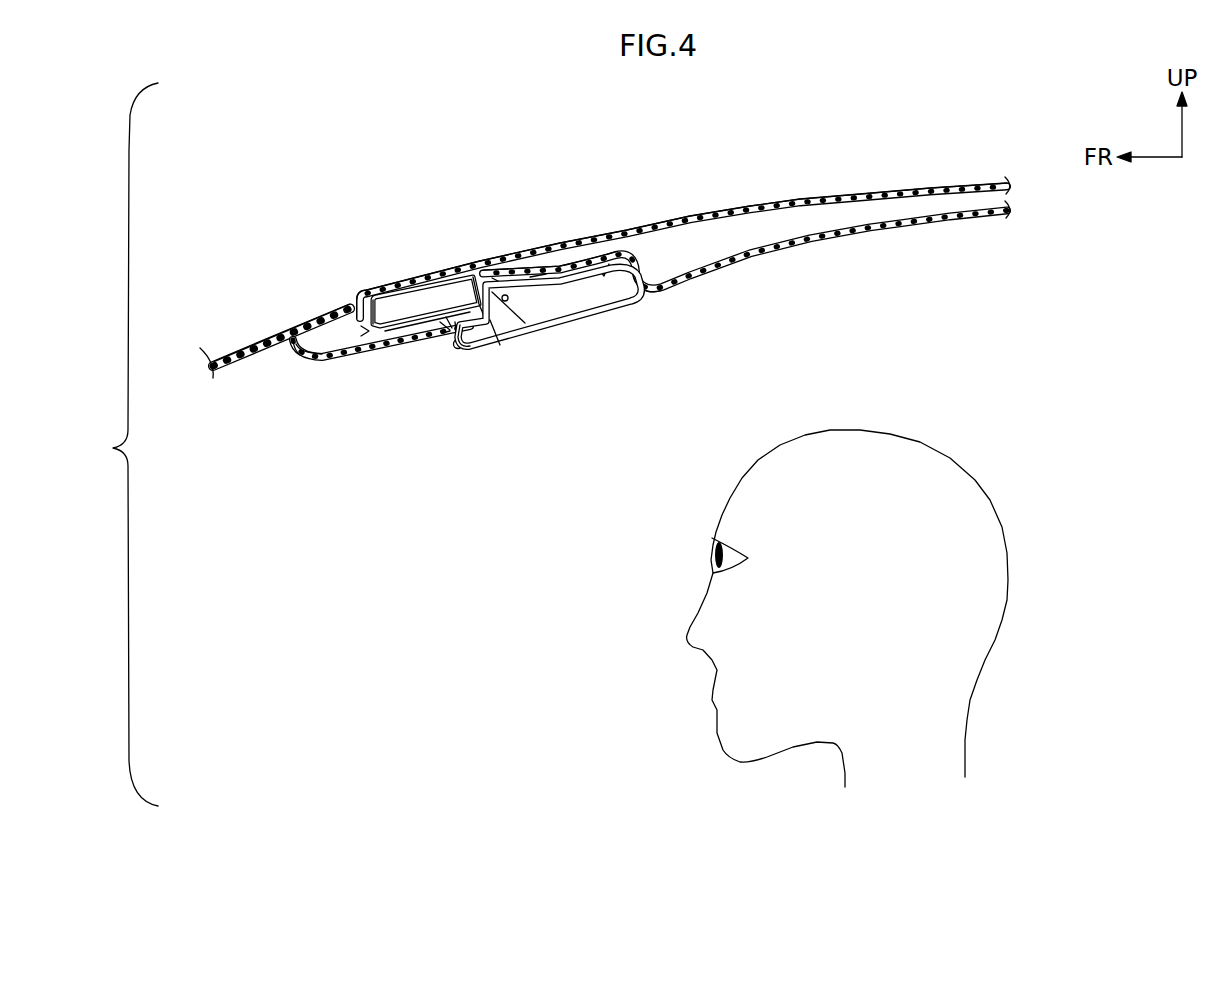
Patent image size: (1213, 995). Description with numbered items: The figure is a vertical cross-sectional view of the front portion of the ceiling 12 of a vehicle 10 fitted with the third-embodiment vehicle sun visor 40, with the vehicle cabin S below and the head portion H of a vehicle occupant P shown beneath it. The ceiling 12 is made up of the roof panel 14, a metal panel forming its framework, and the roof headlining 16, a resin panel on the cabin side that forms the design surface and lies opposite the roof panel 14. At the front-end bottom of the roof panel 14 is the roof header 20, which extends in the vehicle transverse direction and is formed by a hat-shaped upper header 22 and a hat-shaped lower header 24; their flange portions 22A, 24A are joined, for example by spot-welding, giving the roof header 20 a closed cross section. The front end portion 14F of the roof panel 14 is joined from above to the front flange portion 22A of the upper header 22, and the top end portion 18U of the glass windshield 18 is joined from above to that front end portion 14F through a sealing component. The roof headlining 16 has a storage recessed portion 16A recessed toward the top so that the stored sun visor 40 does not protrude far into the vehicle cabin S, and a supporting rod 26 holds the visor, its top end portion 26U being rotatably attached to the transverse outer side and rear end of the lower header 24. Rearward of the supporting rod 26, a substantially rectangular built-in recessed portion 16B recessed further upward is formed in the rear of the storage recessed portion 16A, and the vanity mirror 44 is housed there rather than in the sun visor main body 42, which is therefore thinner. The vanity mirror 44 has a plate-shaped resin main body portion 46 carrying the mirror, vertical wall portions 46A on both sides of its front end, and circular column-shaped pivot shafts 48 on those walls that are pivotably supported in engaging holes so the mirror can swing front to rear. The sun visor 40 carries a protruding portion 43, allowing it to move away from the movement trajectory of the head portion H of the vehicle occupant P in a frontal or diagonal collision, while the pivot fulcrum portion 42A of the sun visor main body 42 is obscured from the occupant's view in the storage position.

The vehicle 10 is at (873, 171).
The ceiling 12 is at (741, 206).
The roof panel 14 is at (810, 197).
The front end portion of the roof panel 14F is at (352, 300).
The roof headlining 16 is at (748, 260).
The storage recessed portion 16A is at (390, 354).
The built-in recessed portion 16B is at (575, 265).
The glass windshield 18 is at (232, 352).
The top end portion of the glass windshield 18U is at (355, 304).
The roof header 20 is at (322, 354).
The upper header 22 is at (473, 268).
The flange portion of the upper header 22A is at (343, 316).
The lower header 24 is at (352, 358).
The flange portion of the lower header 24A is at (296, 342).
The supporting rod 26 is at (450, 345).
The top end portion of the supporting rod 26U is at (440, 312).
The vehicle sun visor 40 is at (598, 326).
The sun visor main body 42 is at (607, 312).
The pivot fulcrum portion 42A is at (456, 338).
The protruding portion 43 is at (508, 302).
The vanity mirror 44 is at (605, 268).
The main body portion 46 is at (639, 270).
The vertical wall portions 46A is at (525, 325).
The pivot shafts 48 is at (497, 350).
The vehicle cabin S is at (916, 335).
The head portion H is at (918, 445).
The vehicle occupant P is at (1003, 526).